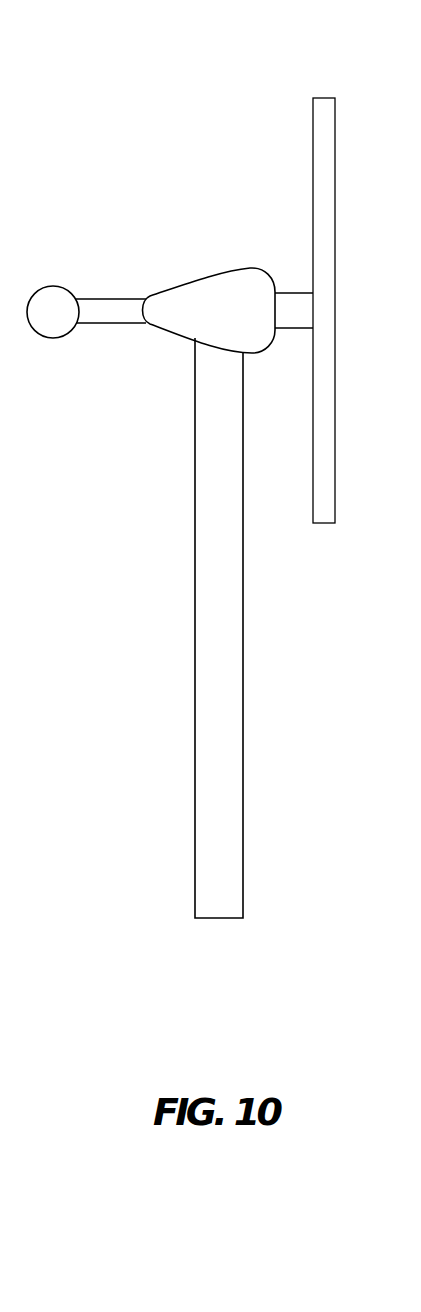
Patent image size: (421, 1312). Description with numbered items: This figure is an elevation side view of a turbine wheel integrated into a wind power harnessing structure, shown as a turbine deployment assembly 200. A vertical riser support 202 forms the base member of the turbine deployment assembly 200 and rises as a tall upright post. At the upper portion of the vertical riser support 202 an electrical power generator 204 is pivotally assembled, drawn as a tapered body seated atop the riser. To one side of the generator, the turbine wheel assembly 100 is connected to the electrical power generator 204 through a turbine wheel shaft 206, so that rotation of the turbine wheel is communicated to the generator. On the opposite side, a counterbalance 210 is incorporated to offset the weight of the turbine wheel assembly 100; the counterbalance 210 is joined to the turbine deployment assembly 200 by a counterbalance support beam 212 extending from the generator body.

The turbine wheel assembly 100 is at (305, 97).
The turbine deployment assembly 200 is at (122, 169).
The vertical riser support 202 is at (232, 660).
The electrical power generator 204 is at (236, 283).
The turbine wheel shaft 206 is at (293, 307).
The counterbalance 210 is at (57, 293).
The counterbalance support beam 212 is at (108, 318).